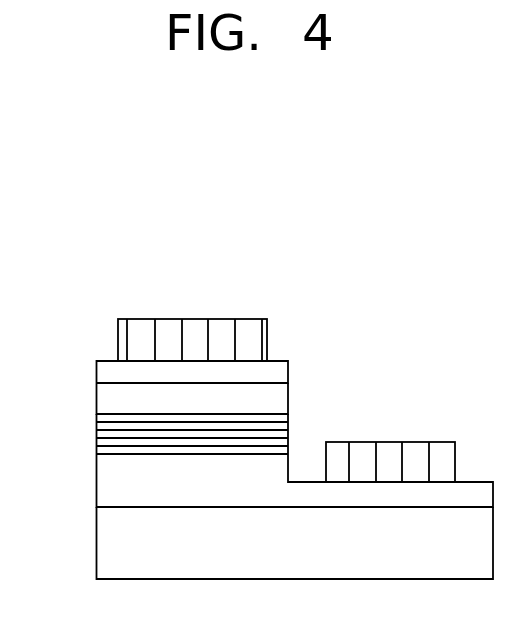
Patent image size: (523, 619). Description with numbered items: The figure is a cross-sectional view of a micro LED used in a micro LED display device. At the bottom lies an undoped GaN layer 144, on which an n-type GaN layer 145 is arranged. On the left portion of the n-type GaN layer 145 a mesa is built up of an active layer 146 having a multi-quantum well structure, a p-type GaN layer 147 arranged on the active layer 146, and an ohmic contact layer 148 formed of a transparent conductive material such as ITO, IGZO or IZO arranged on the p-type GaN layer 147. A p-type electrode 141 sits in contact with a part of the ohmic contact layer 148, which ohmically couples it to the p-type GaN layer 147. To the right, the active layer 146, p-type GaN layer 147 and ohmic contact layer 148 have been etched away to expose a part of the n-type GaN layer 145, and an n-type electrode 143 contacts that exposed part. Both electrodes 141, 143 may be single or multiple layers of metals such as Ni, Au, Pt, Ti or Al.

The p-type electrode 141 is at (195, 327).
The n-type electrode 143 is at (393, 447).
The undoped GaN layer 144 is at (105, 541).
The n-type GaN layer 145 is at (105, 476).
The active layer 146 is at (93, 413).
The p-type GaN layer 147 is at (105, 400).
The ohmic contact layer 148 is at (105, 371).